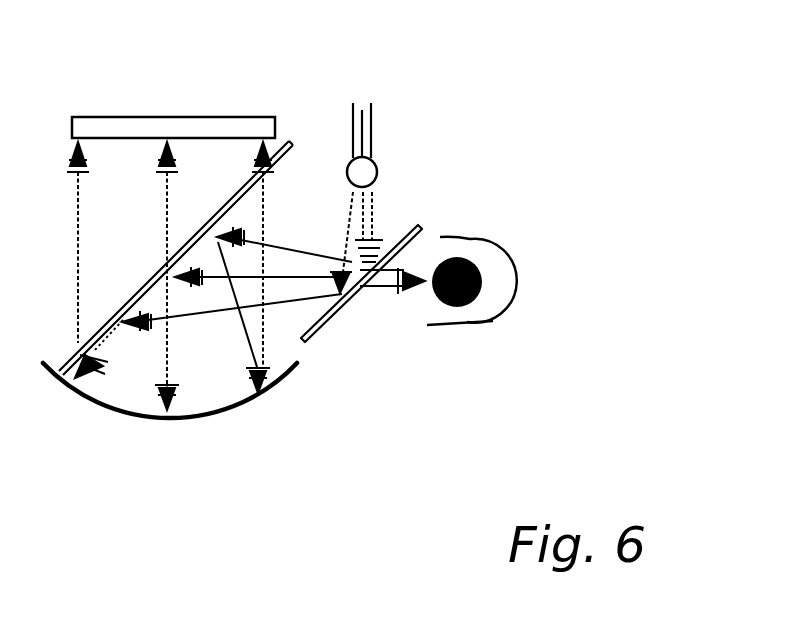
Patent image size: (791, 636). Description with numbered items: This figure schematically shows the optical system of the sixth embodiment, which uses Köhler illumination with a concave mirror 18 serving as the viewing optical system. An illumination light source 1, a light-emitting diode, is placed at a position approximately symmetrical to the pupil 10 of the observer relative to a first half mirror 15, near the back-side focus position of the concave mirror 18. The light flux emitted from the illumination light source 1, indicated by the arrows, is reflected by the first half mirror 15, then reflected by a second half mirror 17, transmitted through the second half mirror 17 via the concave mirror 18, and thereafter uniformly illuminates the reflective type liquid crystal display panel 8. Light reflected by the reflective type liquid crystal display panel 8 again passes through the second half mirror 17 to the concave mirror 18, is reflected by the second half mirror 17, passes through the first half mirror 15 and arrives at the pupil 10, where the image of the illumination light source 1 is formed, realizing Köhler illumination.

The illumination light source 1 is at (378, 168).
The reflective type liquid crystal display panel 8 is at (136, 117).
The pupil 10 is at (507, 290).
The first half mirror 15 is at (337, 313).
The second half mirror 17 is at (291, 141).
The concave mirror 18 is at (232, 411).